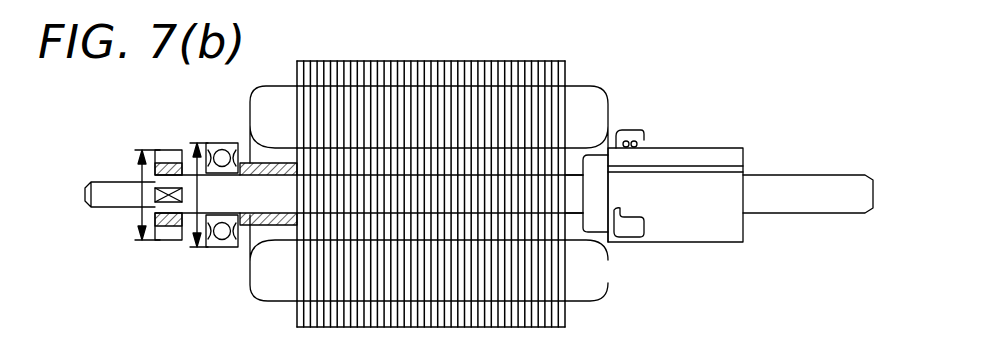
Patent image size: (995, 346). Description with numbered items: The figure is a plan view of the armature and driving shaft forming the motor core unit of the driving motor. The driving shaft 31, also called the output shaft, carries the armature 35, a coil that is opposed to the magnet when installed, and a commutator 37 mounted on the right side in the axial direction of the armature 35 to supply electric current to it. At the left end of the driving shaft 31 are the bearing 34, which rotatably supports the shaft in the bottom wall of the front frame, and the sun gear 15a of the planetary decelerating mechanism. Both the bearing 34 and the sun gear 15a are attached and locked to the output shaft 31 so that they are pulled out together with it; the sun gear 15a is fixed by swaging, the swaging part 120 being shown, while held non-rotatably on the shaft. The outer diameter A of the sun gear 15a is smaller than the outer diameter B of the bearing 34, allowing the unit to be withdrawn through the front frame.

The swaging part 120 is at (155, 172).
The sun gear 15a is at (163, 150).
The bearing 34 is at (222, 143).
The armature 35 is at (540, 64).
The driving shaft 31 is at (292, 207).
The commutator 37 is at (701, 182).